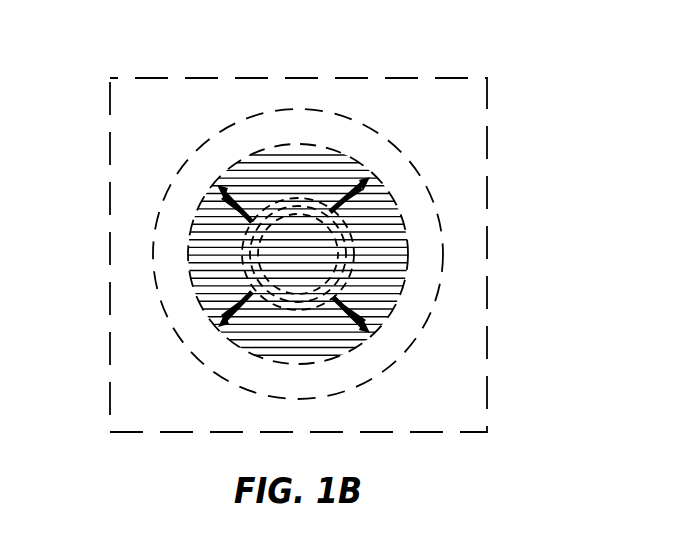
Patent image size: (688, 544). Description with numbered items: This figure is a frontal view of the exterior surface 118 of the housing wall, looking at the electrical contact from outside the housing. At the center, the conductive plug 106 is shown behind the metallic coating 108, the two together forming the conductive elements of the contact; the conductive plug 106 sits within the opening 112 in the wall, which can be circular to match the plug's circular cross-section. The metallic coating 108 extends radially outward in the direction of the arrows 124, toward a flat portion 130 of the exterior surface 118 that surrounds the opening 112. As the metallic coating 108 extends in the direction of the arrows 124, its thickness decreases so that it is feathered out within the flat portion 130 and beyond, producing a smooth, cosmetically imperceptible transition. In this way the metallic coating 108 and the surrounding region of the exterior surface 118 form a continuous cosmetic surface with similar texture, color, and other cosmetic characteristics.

The conductive plug 106 is at (297, 247).
The metallic coating 108 is at (373, 255).
The opening 112 is at (257, 243).
The exterior surface 118 is at (196, 114).
The arrows 124 is at (218, 187).
The flat portion 130 is at (396, 322).